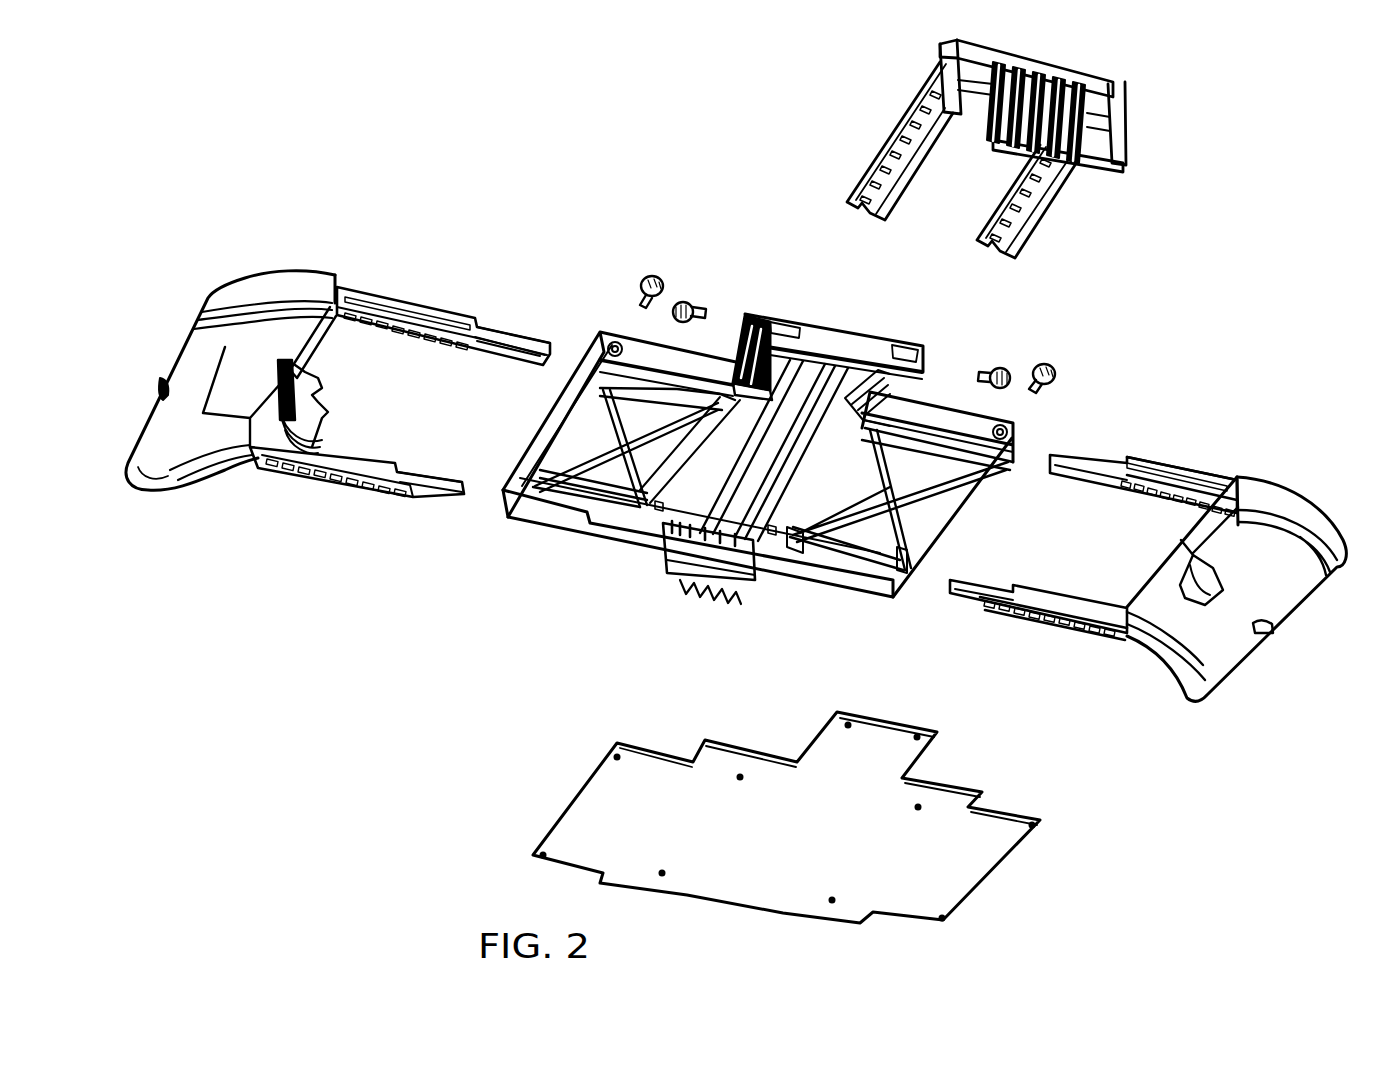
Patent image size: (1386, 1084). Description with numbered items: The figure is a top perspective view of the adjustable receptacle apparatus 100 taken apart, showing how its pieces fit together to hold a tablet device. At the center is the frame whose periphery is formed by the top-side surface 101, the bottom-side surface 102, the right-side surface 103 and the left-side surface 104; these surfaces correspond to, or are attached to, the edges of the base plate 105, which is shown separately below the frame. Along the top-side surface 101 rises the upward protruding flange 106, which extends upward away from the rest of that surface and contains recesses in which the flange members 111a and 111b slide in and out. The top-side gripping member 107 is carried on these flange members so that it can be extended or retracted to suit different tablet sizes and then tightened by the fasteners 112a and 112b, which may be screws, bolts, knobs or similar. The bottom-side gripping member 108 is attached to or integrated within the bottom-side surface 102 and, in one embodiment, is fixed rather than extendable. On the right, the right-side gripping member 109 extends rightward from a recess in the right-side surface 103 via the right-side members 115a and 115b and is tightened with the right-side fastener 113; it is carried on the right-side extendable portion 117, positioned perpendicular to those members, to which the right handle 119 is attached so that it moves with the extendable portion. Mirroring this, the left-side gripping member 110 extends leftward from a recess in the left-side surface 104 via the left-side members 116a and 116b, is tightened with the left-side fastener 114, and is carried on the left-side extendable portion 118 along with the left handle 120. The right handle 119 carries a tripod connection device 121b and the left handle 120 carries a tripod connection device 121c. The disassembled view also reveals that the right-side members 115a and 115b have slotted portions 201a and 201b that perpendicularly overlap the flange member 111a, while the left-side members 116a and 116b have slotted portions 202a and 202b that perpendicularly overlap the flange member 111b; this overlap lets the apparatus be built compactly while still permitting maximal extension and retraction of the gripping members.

The adjustable receptacle apparatus 100 is at (286, 191).
The top-side surface 101 is at (930, 412).
The bottom-side surface 102 is at (560, 525).
The right-side surface 103 is at (930, 588).
The left-side surface 104 is at (553, 427).
The base plate 105 is at (920, 845).
The upward protruding flange 106 is at (895, 342).
The top-side gripping member 107 is at (1007, 157).
The bottom-side gripping member 108 is at (700, 598).
The right-side gripping member 109 is at (1197, 600).
The left-side gripping member 110 is at (326, 420).
The flange member 111a is at (1033, 217).
The flange member 111b is at (880, 150).
The fastener 112a is at (997, 367).
The fastener 112b is at (700, 302).
The right-side fastener 113 is at (1055, 372).
The left-side fastener 114 is at (655, 274).
The right-side member 115a is at (1180, 465).
The right-side member 115b is at (1072, 628).
The left-side member 116a is at (388, 290).
The left-side member 116b is at (320, 475).
The right-side extendable portion 117 is at (1220, 535).
The left-side extendable portion 118 is at (308, 352).
The right handle 119 is at (1300, 580).
The left handle 120 is at (190, 355).
The tripod connection device 121b is at (1280, 627).
The tripod connection device 121c is at (155, 380).
The slotted portion 201a is at (1078, 455).
The slotted portion 201b is at (975, 583).
The slotted portion 202a is at (507, 338).
The slotted portion 202b is at (447, 485).